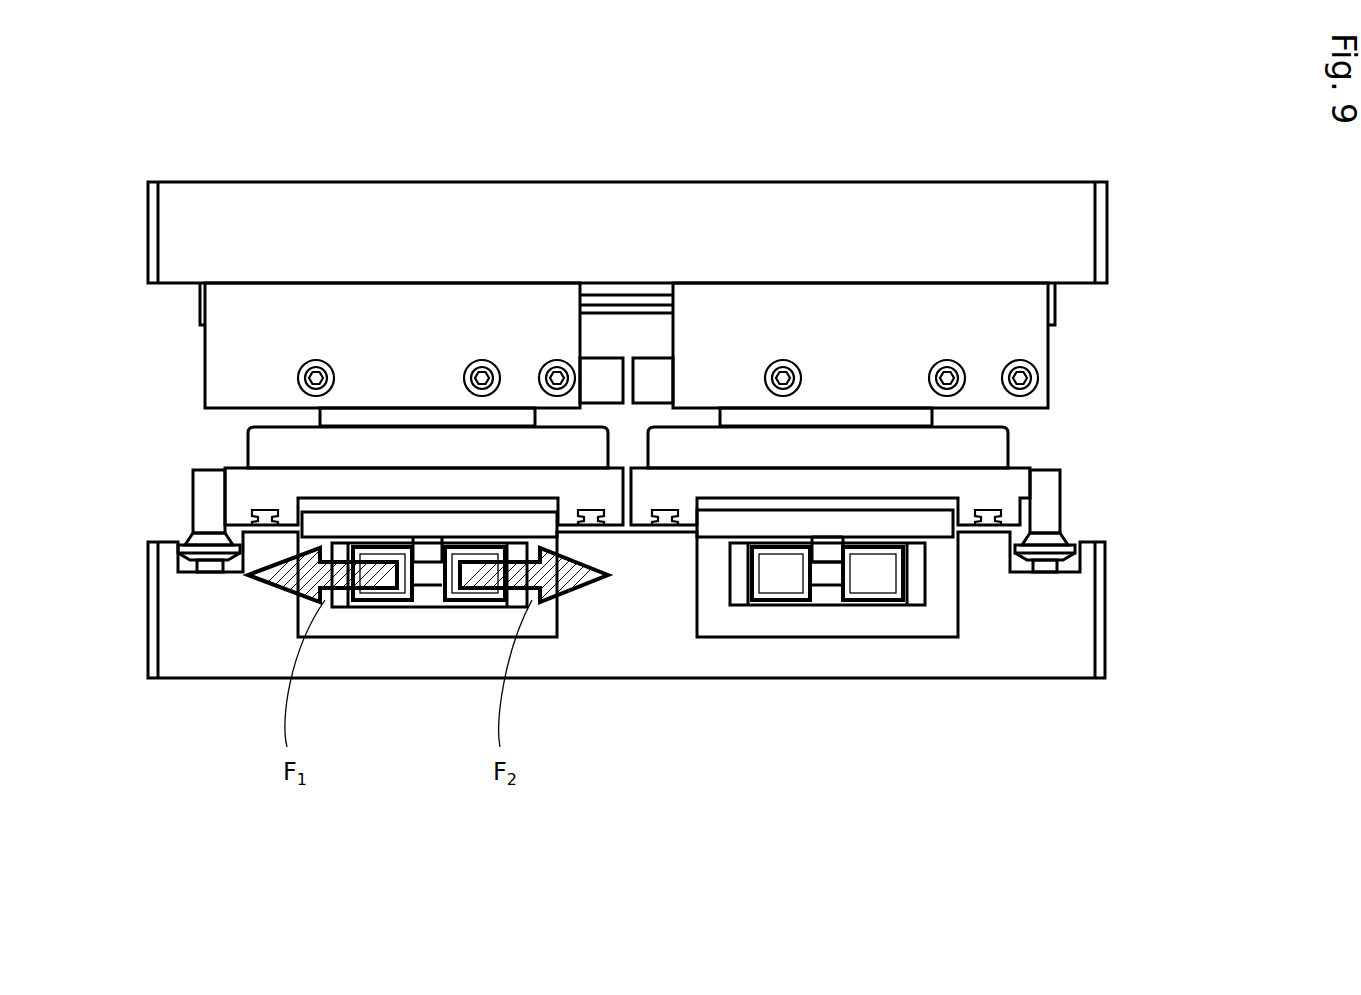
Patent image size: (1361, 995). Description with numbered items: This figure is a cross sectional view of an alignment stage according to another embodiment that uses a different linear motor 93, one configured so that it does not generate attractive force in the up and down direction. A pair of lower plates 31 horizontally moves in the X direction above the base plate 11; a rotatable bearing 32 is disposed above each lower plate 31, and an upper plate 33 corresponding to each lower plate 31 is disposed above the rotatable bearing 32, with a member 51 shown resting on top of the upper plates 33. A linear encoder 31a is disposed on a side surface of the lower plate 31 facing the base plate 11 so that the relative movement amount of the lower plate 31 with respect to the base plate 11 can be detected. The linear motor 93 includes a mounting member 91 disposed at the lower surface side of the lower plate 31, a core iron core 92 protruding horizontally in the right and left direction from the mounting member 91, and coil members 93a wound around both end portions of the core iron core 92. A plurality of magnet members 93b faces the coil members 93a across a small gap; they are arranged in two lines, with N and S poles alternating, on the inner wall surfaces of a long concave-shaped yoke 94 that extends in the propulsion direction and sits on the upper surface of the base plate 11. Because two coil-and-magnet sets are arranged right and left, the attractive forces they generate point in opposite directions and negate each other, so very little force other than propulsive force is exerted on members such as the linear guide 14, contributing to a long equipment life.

The base plate 11 is at (1080, 632).
The linear guide 14 is at (985, 520).
The lower plate 31 is at (1005, 480).
The linear encoder 31a is at (195, 548).
The rotatable bearing 32 is at (248, 455).
The upper plate 33 is at (205, 378).
The top plate 51 is at (1078, 232).
The mounting member 91 is at (828, 545).
The core iron core 92 is at (822, 578).
The linear motor 93 is at (828, 603).
The coil member 93a is at (770, 592).
The magnet member 93b is at (738, 590).
The yoke 94 is at (706, 588).